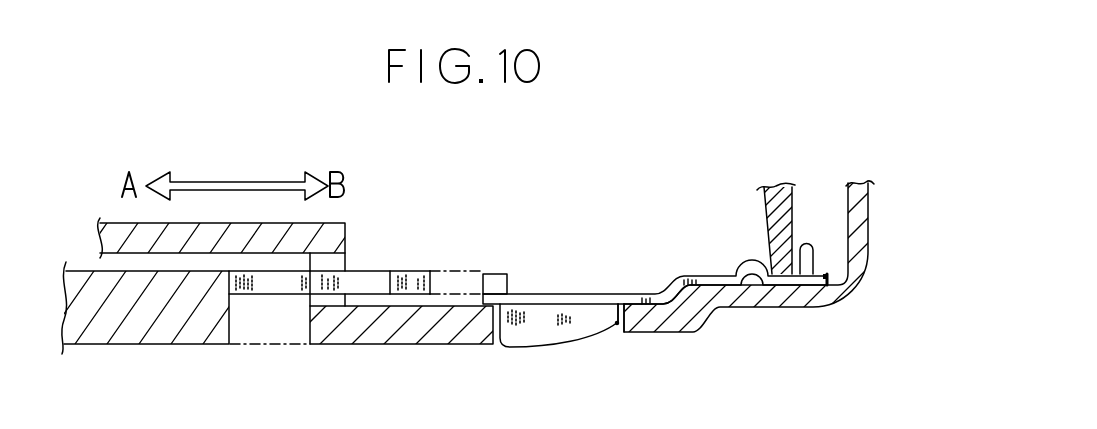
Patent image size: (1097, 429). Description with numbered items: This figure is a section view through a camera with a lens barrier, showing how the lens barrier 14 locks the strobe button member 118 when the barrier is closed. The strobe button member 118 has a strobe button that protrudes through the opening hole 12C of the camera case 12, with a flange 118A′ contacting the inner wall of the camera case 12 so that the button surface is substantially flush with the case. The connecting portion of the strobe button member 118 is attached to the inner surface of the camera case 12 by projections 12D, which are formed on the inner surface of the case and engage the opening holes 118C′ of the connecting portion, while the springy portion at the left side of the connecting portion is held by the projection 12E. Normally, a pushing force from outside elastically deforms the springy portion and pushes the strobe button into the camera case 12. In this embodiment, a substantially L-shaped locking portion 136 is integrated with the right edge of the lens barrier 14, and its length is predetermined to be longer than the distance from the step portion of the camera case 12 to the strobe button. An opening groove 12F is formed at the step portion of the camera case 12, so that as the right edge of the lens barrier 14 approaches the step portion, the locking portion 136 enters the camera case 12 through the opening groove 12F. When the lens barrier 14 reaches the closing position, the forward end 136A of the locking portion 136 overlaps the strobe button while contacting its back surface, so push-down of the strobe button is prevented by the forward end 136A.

The camera case 12 is at (741, 256).
The opening hole 12C is at (649, 355).
The projection 12D is at (828, 208).
The projection 12E is at (775, 220).
The opening groove 12F is at (239, 221).
The lens barrier 14 is at (176, 337).
The strobe button member 118 is at (559, 355).
The flange 118A′ is at (655, 256).
The opening hole 118C′ is at (820, 340).
The locking portion 136 is at (373, 341).
The forward end 136A is at (393, 232).